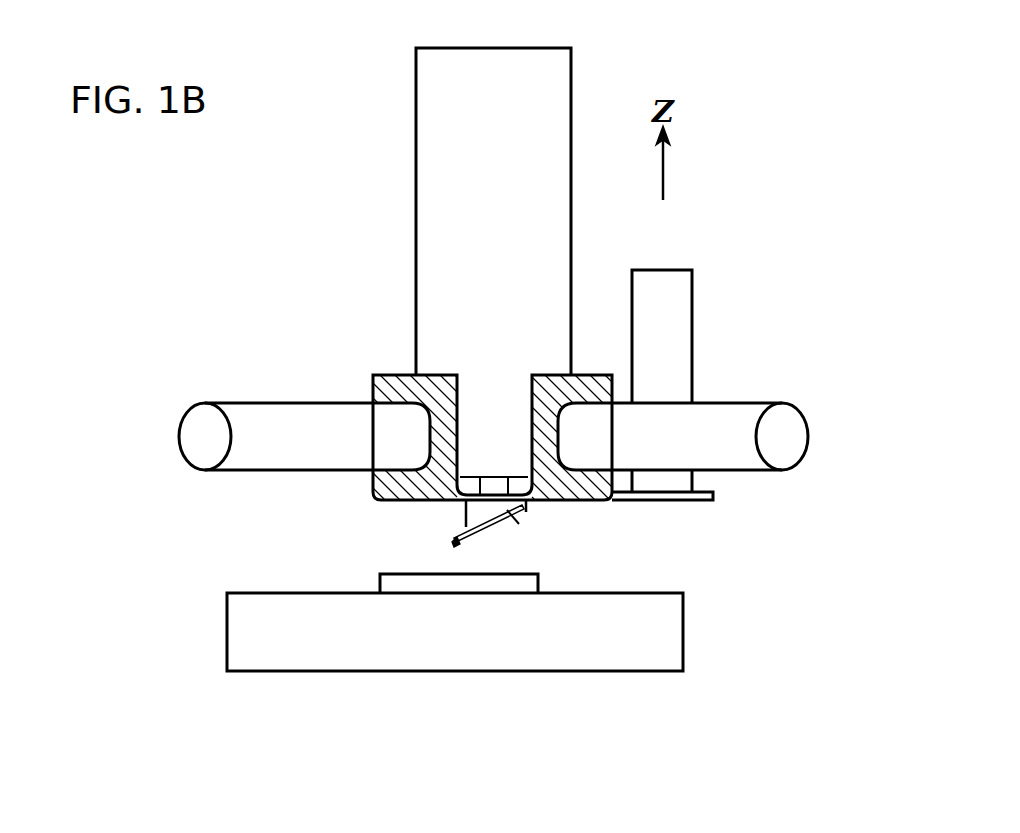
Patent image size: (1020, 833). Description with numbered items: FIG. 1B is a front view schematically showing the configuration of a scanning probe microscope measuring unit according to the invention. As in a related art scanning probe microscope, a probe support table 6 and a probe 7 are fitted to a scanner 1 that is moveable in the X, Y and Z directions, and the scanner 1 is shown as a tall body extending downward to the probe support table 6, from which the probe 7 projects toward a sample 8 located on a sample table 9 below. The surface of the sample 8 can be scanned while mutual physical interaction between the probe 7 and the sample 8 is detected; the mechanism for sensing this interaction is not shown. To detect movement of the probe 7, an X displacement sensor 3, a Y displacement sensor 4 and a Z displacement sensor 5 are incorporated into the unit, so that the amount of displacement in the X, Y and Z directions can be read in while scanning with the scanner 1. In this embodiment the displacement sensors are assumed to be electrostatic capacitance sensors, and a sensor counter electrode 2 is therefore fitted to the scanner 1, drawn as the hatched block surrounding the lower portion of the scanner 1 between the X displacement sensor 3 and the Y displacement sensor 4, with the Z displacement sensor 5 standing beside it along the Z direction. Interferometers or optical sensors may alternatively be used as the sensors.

The scanner 1 is at (447, 57).
The sensor counter electrode 2 is at (393, 390).
The X displacement sensor 3 is at (192, 432).
The Y displacement sensor 4 is at (790, 430).
The Z displacement sensor 5 is at (675, 308).
The probe support table 6 is at (512, 520).
The probe 7 is at (493, 527).
The sample 8 is at (395, 583).
The sample table 9 is at (263, 607).